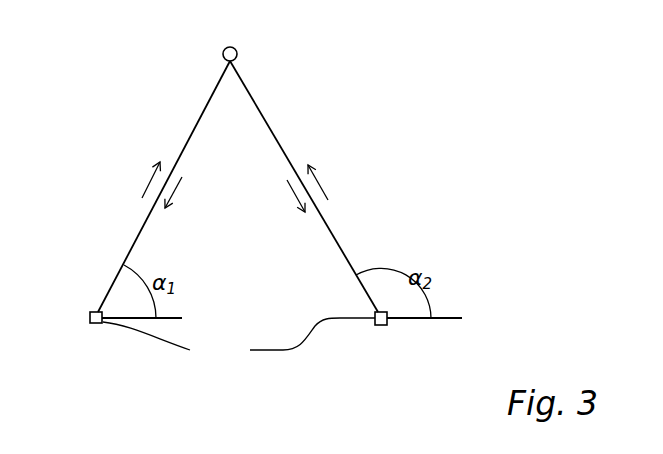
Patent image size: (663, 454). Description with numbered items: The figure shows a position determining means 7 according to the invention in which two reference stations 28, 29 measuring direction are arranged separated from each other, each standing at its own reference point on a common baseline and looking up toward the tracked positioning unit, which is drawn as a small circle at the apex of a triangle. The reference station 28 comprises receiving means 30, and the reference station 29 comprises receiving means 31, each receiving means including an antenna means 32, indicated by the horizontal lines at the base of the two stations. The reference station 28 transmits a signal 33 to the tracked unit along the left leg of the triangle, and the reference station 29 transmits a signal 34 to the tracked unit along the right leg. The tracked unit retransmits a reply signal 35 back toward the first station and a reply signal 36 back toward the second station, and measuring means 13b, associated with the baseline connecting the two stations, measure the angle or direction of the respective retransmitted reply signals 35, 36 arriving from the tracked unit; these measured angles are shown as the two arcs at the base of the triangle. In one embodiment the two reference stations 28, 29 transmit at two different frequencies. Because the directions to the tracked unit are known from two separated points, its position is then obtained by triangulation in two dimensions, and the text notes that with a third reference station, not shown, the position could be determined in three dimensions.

The positioning system (TPU and reference points) 7 is at (425, 142).
The measuring means 13b is at (239, 341).
The reference station 28 is at (86, 348).
The receiving means 30 is at (97, 326).
The reference station 29 is at (366, 348).
The receiving means 31 is at (381, 327).
The antenna means 32 is at (90, 315).
The signal 33 is at (140, 178).
The signal 34 is at (330, 182).
The retransmitted reply signal 35 is at (187, 192).
The retransmitted reply signal 36 is at (281, 196).